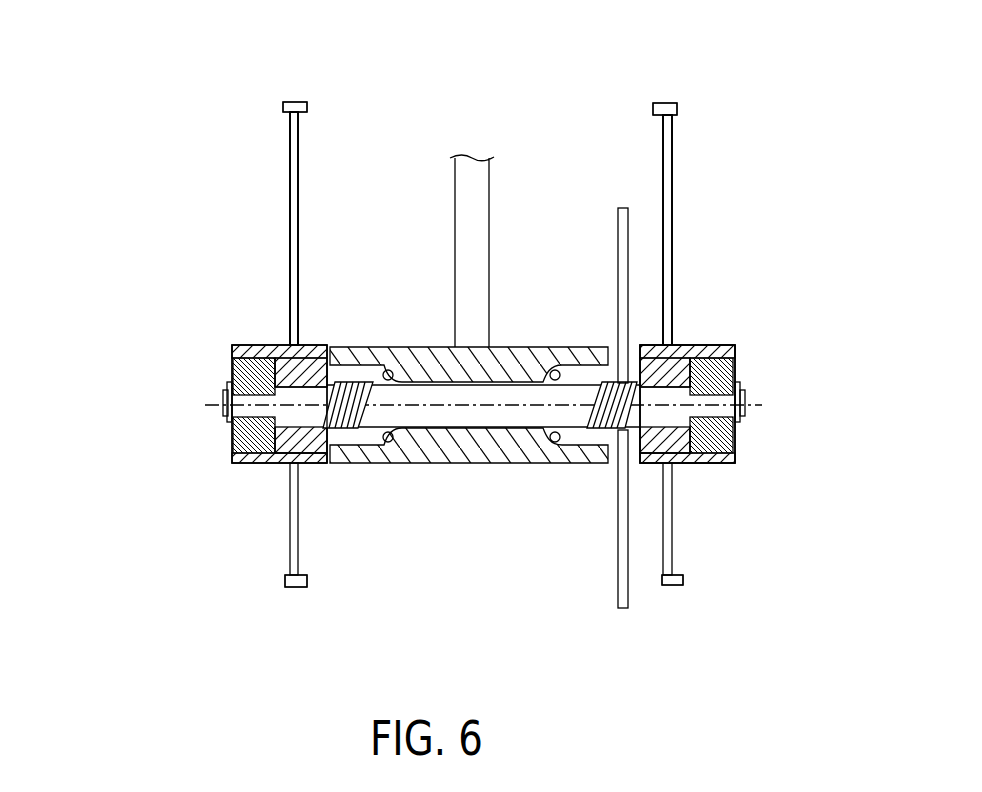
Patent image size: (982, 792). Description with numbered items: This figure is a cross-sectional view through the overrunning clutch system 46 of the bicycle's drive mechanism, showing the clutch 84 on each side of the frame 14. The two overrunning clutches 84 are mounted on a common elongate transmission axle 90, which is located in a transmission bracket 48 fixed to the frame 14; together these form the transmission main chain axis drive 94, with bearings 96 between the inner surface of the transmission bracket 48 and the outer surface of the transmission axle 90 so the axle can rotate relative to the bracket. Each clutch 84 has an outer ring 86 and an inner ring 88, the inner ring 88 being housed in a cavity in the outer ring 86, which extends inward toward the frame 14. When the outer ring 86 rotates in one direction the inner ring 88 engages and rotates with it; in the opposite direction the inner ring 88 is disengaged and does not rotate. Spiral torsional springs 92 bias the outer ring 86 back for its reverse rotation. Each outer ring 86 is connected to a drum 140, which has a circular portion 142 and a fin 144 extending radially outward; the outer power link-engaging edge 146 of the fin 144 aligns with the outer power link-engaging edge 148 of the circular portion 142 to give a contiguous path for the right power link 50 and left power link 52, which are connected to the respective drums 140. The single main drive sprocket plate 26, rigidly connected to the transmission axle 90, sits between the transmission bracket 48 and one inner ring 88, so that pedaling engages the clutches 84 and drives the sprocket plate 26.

The frame 14 is at (455, 252).
The main drive sprocket plate 26 is at (618, 262).
The overrunning clutch system 46 is at (806, 174).
The transmission bracket 48 is at (507, 350).
The right power link 50 is at (293, 103).
The left power link 52 is at (672, 104).
The overrunning clutch 84 is at (195, 203).
The outer ring 86 is at (236, 458).
The inner ring 88 is at (236, 374).
The transmission axle 90 is at (416, 400).
The spiral torsional spring 92 is at (350, 432).
The transmission main chain axis drive 94 is at (477, 470).
The bearing 96 is at (389, 443).
The drum 140 is at (284, 184).
The circular portion 142 is at (290, 242).
The fin 144 is at (298, 133).
The outer power link-engaging edge 146 is at (287, 107).
The outer power link-engaging edge 148 is at (290, 578).